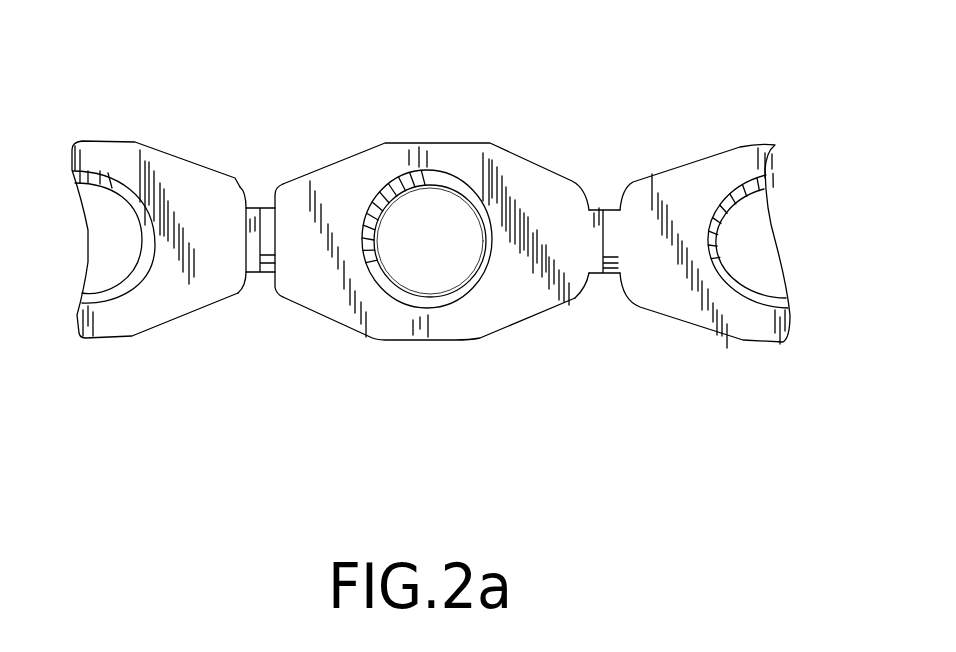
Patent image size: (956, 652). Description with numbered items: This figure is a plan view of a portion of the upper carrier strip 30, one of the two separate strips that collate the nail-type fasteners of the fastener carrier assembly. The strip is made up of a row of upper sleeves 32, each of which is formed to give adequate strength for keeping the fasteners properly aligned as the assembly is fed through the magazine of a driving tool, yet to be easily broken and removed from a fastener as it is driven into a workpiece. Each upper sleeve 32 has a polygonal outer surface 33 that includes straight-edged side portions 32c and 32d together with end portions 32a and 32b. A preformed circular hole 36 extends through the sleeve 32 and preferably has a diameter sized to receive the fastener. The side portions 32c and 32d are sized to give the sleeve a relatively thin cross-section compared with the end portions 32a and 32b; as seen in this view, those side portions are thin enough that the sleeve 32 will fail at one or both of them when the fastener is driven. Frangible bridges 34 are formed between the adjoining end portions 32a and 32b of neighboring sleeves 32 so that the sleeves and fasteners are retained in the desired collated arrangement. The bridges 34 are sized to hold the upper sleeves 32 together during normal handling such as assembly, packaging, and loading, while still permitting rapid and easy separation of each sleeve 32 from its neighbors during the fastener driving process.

The upper carrier strip 30 is at (586, 93).
The upper sleeve 32 is at (432, 104).
The end portion 32a is at (580, 240).
The end portion 32b is at (287, 237).
The side portion 32c is at (452, 176).
The side portion 32d is at (425, 340).
The polygonal outer surface 33 is at (298, 195).
The frangible bridges 34 is at (258, 197).
The circular hole 36 is at (422, 260).